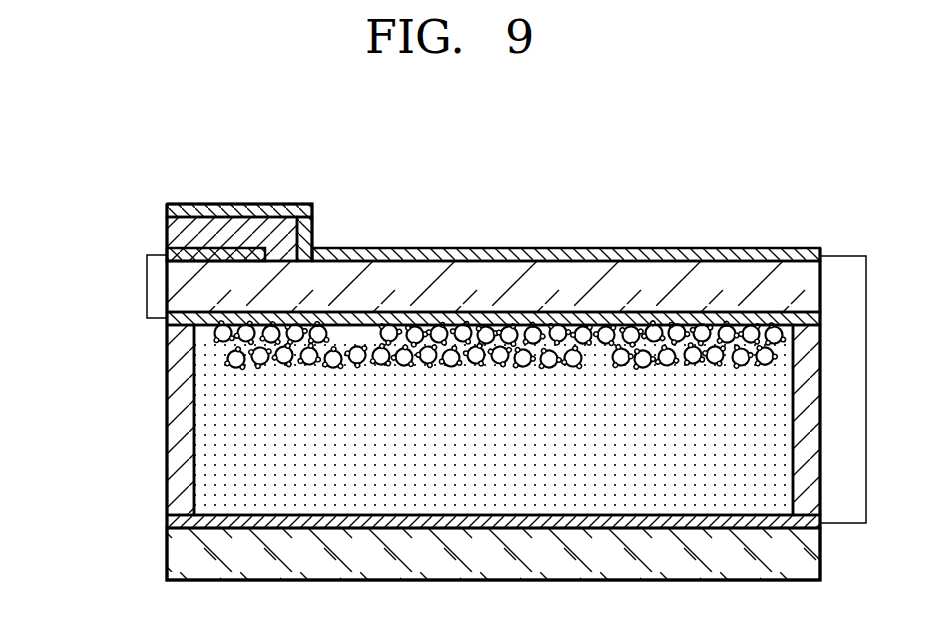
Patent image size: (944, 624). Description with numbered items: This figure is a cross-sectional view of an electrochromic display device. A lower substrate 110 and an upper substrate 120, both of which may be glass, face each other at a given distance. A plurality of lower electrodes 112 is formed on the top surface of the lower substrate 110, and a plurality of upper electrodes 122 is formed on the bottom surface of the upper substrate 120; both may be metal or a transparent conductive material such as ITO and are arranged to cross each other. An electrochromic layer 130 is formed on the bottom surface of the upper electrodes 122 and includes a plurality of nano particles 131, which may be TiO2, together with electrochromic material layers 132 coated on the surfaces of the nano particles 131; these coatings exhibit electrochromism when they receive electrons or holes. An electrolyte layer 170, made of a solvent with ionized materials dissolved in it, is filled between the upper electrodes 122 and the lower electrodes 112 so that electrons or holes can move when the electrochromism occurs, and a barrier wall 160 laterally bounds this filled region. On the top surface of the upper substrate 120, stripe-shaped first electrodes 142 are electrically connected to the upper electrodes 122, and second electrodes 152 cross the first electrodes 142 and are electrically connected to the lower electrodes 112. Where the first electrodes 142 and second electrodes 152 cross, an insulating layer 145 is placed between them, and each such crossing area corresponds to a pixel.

The lower substrate 110 is at (176, 558).
The lower electrodes 112 is at (176, 521).
The upper substrate 120 is at (492, 275).
The upper electrodes 122 is at (583, 322).
The electrochromic layer 130 is at (412, 362).
The nano particles 131 is at (236, 353).
The electrochromic material layers 132 is at (232, 366).
The first electrodes 142 is at (193, 253).
The insulating layers 145 is at (257, 228).
The second electrodes 152 is at (368, 248).
The barrier wall 160 is at (181, 438).
The electrolyte layer 170 is at (206, 473).